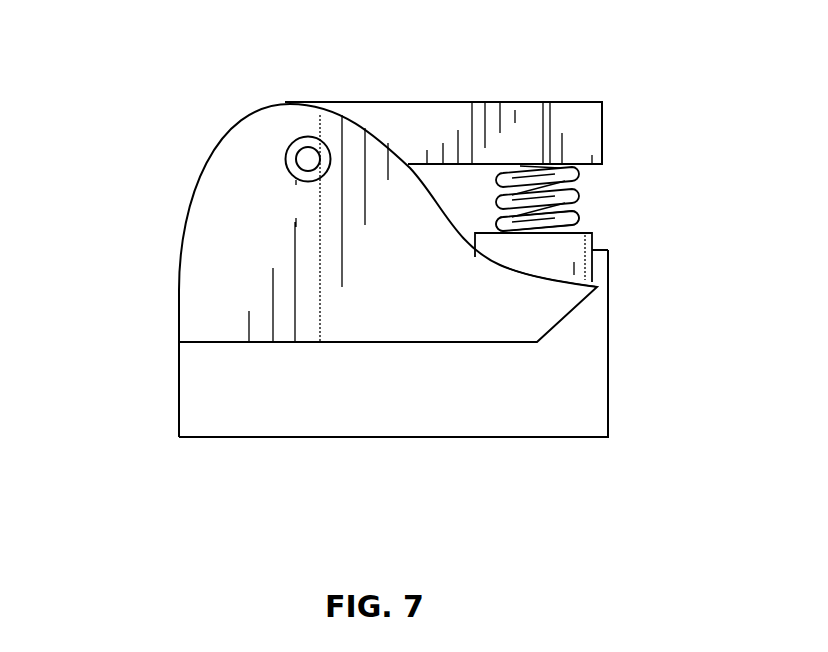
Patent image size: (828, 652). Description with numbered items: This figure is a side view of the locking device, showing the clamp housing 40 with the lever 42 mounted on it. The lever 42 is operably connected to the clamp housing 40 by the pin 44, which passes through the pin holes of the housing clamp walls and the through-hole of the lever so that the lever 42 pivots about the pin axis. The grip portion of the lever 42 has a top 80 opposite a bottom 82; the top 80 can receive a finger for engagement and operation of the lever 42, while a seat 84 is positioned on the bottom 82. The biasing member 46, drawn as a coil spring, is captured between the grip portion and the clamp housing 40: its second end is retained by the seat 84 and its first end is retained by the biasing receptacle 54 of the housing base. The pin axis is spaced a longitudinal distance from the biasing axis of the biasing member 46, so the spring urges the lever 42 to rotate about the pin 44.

The clamp housing 40 is at (140, 321).
The lever 42 is at (437, 96).
The pin 44 is at (306, 137).
The biasing member 46 is at (600, 250).
The biasing receptacle 54 is at (555, 263).
The top 80 is at (590, 96).
The bottom 82 is at (588, 166).
The seat 84 is at (576, 210).